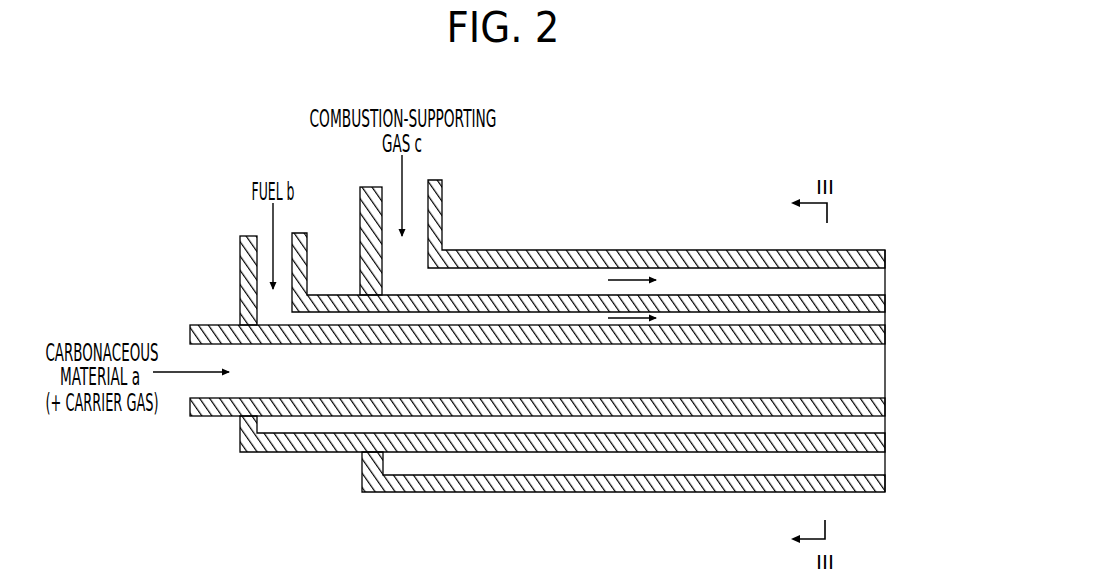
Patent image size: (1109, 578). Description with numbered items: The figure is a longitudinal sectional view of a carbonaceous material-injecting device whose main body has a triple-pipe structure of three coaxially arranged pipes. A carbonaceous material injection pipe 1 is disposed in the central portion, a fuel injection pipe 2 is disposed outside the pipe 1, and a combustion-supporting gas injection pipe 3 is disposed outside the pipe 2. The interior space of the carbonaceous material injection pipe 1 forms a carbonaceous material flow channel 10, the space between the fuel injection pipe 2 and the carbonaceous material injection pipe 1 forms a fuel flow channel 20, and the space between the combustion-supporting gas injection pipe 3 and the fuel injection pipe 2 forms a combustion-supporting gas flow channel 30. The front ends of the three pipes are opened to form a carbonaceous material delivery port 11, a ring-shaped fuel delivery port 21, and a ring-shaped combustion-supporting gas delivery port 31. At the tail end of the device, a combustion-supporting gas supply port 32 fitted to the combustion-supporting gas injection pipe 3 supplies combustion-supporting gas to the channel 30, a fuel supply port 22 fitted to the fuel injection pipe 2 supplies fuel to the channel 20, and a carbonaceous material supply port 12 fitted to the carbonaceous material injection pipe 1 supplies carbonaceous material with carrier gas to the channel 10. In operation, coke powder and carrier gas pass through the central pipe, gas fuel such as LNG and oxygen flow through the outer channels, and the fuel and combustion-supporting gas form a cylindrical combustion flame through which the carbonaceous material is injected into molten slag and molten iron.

The carbonaceous material injection pipe 1 is at (527, 326).
The fuel injection pipe 2 is at (580, 296).
The combustion-supporting gas injection pipe 3 is at (663, 250).
The carbonaceous material flow channel 10 is at (212, 390).
The carbonaceous material delivery port 11 is at (885, 372).
The carbonaceous material supply port 12 is at (190, 362).
The fuel flow channel 20 is at (297, 422).
The fuel delivery port 21 is at (885, 422).
The fuel supply port 22 is at (262, 249).
The combustion-supporting gas flow channel 30 is at (487, 465).
The combustion-supporting gas delivery port 31 is at (885, 466).
The combustion-supporting gas supply port 32 is at (415, 200).